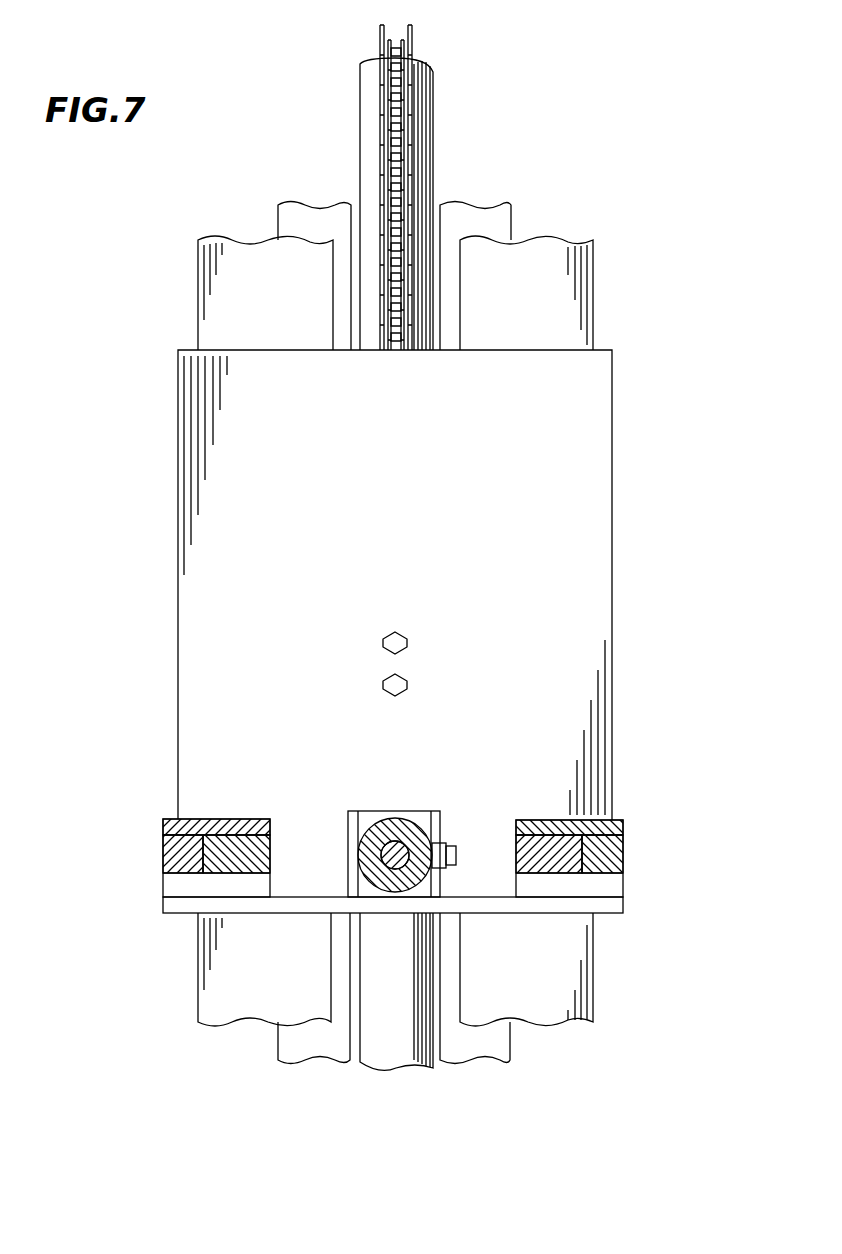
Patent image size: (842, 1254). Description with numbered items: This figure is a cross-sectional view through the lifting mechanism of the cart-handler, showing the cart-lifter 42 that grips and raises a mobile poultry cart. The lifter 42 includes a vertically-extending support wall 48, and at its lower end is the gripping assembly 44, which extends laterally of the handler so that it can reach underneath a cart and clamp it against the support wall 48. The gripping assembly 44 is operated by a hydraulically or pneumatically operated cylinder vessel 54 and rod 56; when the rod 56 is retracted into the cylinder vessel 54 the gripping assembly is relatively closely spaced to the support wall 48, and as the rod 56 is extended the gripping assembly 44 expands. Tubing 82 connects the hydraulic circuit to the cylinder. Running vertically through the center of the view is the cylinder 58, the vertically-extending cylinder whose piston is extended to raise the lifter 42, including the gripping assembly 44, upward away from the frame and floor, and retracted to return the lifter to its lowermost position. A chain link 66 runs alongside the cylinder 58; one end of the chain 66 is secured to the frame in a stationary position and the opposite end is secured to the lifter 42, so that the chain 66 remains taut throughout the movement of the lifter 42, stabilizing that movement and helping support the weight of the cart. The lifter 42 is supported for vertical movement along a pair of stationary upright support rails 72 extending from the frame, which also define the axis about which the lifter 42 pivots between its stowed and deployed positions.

The cart-lifter 42 is at (612, 388).
The gripping assembly 44 is at (623, 860).
The support wall 48 is at (590, 477).
The cylinder vessel 54 is at (386, 812).
The rod 56 is at (382, 856).
The cylinder 58 is at (432, 92).
The chain link 66 is at (405, 145).
The support rails 72 is at (318, 212).
The tubing 82 is at (448, 845).